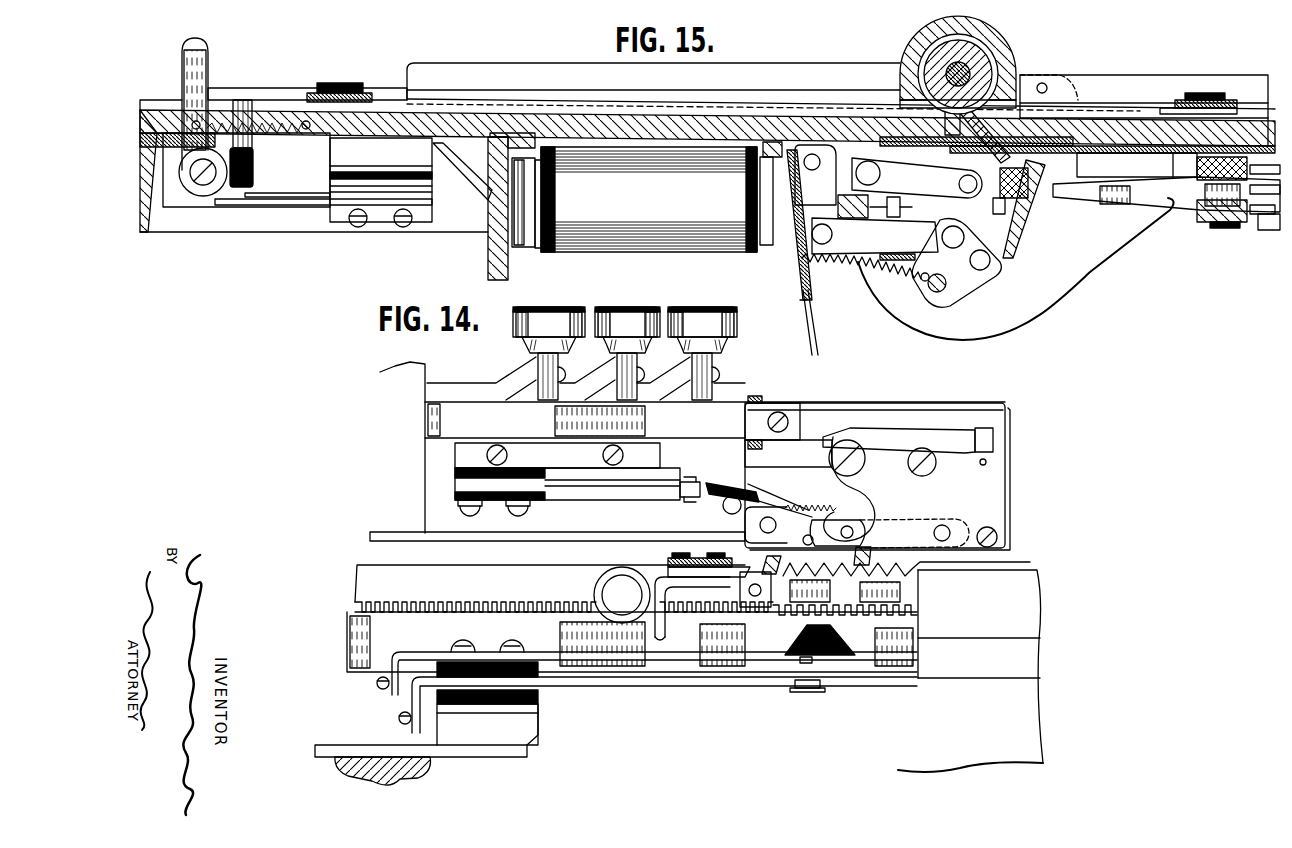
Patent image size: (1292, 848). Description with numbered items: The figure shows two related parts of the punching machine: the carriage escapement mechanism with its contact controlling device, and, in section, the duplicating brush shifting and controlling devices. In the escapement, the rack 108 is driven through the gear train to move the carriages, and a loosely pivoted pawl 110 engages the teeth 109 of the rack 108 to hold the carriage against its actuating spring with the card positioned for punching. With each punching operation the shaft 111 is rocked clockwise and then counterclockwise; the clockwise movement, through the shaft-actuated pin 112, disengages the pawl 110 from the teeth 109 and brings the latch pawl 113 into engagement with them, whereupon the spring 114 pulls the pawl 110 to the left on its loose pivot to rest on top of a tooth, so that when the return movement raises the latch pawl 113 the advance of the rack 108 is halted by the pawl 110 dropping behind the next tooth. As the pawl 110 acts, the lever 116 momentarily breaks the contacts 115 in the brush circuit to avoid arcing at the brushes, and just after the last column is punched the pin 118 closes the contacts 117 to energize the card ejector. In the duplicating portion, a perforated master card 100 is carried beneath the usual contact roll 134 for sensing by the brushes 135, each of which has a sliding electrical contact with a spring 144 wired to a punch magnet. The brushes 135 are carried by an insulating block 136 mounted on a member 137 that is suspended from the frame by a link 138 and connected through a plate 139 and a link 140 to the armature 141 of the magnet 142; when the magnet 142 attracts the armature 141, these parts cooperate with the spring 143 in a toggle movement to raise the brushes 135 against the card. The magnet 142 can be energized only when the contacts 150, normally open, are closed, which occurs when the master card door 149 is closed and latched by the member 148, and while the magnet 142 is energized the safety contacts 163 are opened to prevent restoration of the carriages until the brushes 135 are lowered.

In FIG. 15, the perforated master card 100 is at (1090, 110).
In FIG. 15, the contact roll 134 is at (987, 60).
In FIG. 15, the brushes 135 is at (958, 137).
In FIG. 15, the insulating block 136 is at (1008, 258).
In FIG. 15, the member 137 is at (1013, 223).
In FIG. 15, the link 138 is at (910, 188).
In FIG. 15, the plate 139 is at (967, 287).
In FIG. 15, the link 140 is at (875, 239).
In FIG. 15, the armature 141 is at (790, 260).
In FIG. 15, the magnet 142 is at (647, 197).
In FIG. 15, the spring 143 is at (850, 273).
In FIG. 15, the spring 144 is at (1138, 197).
In FIG. 15, the member 148 is at (212, 62).
In FIG. 15, the master card door 149 is at (252, 90).
In FIG. 15, the contacts 150 is at (252, 196).
In FIG. 15, the safety contacts 163 is at (812, 317).
In FIG. 14, the rack 108 is at (372, 567).
In FIG. 14, the teeth 109 is at (653, 567).
In FIG. 14, the pawl 110 is at (763, 557).
In FIG. 14, the shaft 111 is at (852, 529).
In FIG. 14, the pin 112 is at (808, 535).
In FIG. 14, the latch pawl 113 is at (867, 543).
In FIG. 14, the spring 114 is at (798, 513).
In FIG. 14, the contacts 115 is at (684, 486).
In FIG. 14, the lever 116 is at (748, 487).
In FIG. 14, the contacts 117 is at (810, 665).
In FIG. 14, the pin 118 is at (667, 620).